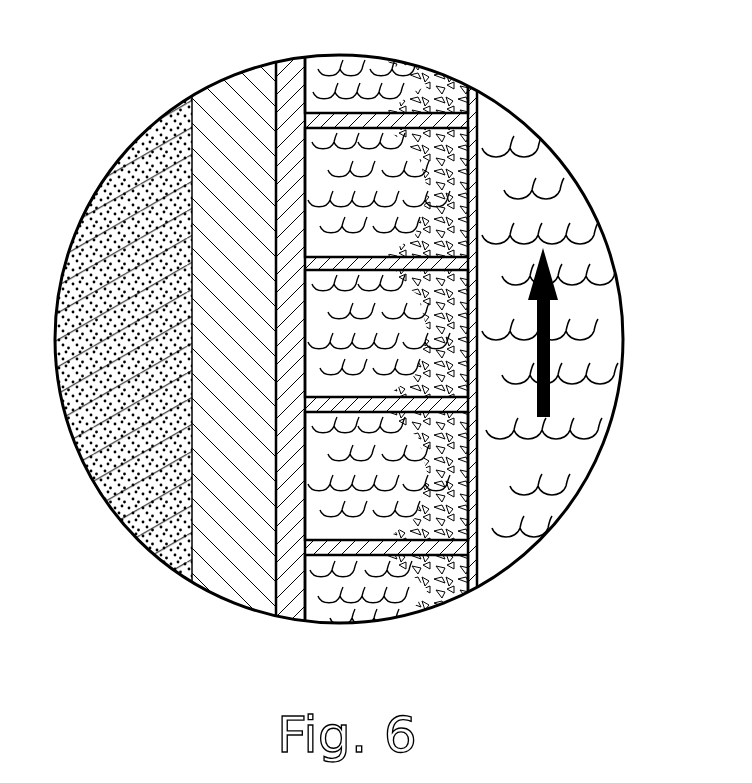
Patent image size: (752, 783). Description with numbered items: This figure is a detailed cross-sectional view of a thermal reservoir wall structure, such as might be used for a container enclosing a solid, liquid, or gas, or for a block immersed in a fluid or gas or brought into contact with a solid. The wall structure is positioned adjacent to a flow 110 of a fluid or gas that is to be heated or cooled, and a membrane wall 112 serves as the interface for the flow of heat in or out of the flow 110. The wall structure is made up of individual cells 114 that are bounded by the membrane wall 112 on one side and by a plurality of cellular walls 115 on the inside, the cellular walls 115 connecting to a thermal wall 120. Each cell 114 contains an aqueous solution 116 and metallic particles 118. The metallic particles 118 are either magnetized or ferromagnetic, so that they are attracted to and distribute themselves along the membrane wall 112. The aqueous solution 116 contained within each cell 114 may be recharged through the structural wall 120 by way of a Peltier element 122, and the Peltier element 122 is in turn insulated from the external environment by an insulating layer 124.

The flow 110 is at (590, 388).
The membrane wall 112 is at (475, 472).
The cells 114 is at (366, 520).
The cellular walls 115 is at (355, 118).
The aqueous solution 116 is at (393, 605).
The metallic particles 118 is at (453, 88).
The thermal wall 120 is at (292, 62).
The Peltier element 122 is at (228, 87).
The insulating layer 124 is at (97, 455).